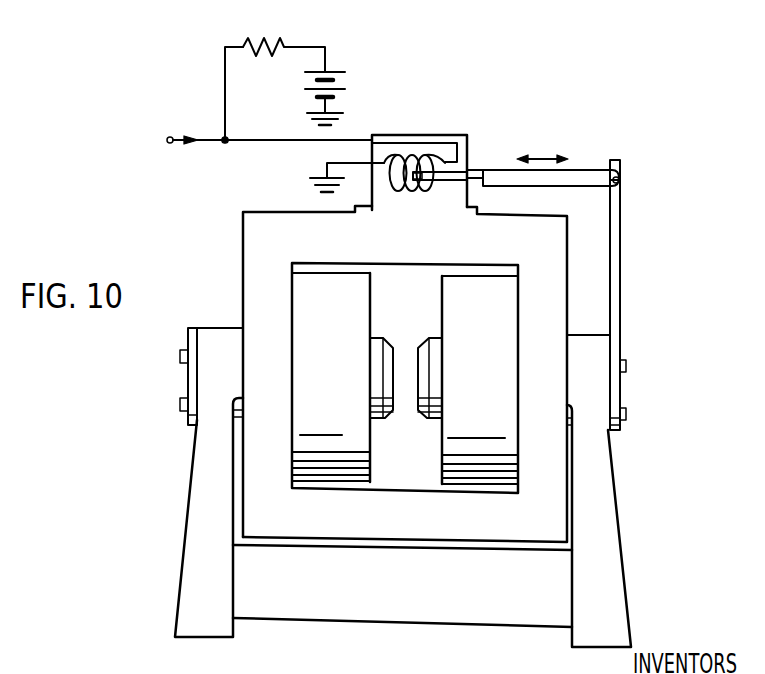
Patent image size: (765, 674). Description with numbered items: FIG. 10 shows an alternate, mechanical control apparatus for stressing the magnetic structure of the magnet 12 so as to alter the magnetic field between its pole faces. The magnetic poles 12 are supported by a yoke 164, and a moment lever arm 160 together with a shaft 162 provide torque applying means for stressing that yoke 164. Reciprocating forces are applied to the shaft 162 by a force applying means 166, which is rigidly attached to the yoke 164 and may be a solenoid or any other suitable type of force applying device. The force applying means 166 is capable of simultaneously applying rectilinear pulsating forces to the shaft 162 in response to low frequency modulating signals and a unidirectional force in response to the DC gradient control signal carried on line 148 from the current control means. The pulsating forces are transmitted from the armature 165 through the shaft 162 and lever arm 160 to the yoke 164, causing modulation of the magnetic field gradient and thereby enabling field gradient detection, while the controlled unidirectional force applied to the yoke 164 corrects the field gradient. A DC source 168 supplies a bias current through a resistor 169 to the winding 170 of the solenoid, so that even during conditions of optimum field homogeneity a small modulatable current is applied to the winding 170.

The magnet 12 is at (335, 399).
The line 148 is at (210, 138).
The moment lever arm 160 is at (622, 248).
The shaft 162 is at (583, 171).
The yoke 164 is at (243, 267).
The armature 165 is at (474, 170).
The force applying means 166 is at (446, 136).
The DC source 168 is at (336, 72).
The resistor 169 is at (276, 45).
The winding 170 is at (419, 193).